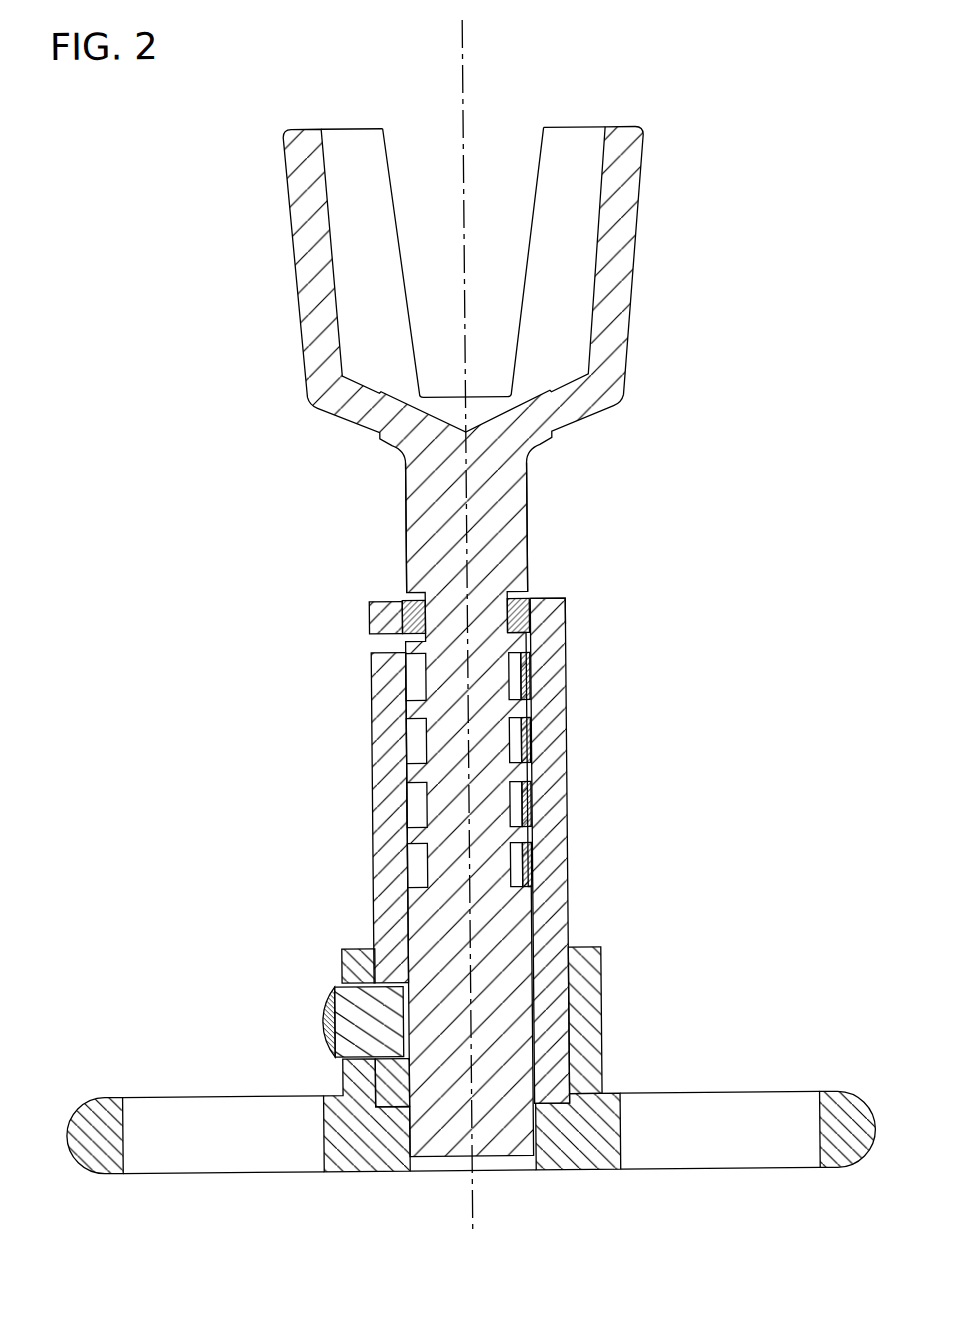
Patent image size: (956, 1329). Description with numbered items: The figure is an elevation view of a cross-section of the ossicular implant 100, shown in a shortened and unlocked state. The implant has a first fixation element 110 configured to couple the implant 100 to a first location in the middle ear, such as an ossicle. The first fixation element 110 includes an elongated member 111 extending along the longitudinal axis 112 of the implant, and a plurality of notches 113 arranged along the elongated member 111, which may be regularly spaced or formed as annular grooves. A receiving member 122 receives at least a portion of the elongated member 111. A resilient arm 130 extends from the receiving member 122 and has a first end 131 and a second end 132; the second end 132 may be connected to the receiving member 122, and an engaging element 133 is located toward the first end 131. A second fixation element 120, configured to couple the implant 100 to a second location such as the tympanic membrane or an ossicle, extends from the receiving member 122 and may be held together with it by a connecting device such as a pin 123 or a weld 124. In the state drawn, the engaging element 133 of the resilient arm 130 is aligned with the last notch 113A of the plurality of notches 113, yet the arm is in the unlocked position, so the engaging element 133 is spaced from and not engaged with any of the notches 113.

The ossicular implant 100 is at (763, 79).
The first fixation element 110 is at (318, 474).
The elongated member 111 is at (532, 488).
The longitudinal axis 112 is at (469, 55).
The plurality of notches 113 is at (426, 682).
The last notch 113A is at (404, 613).
The second fixation element 120 is at (100, 1093).
The receiving member 122 is at (371, 912).
The pin 123 is at (348, 1002).
The weld 124 is at (328, 1048).
The resilient arm 130 is at (567, 812).
The first end 131 is at (588, 599).
The second end 132 is at (586, 940).
The engaging element 133 is at (372, 627).